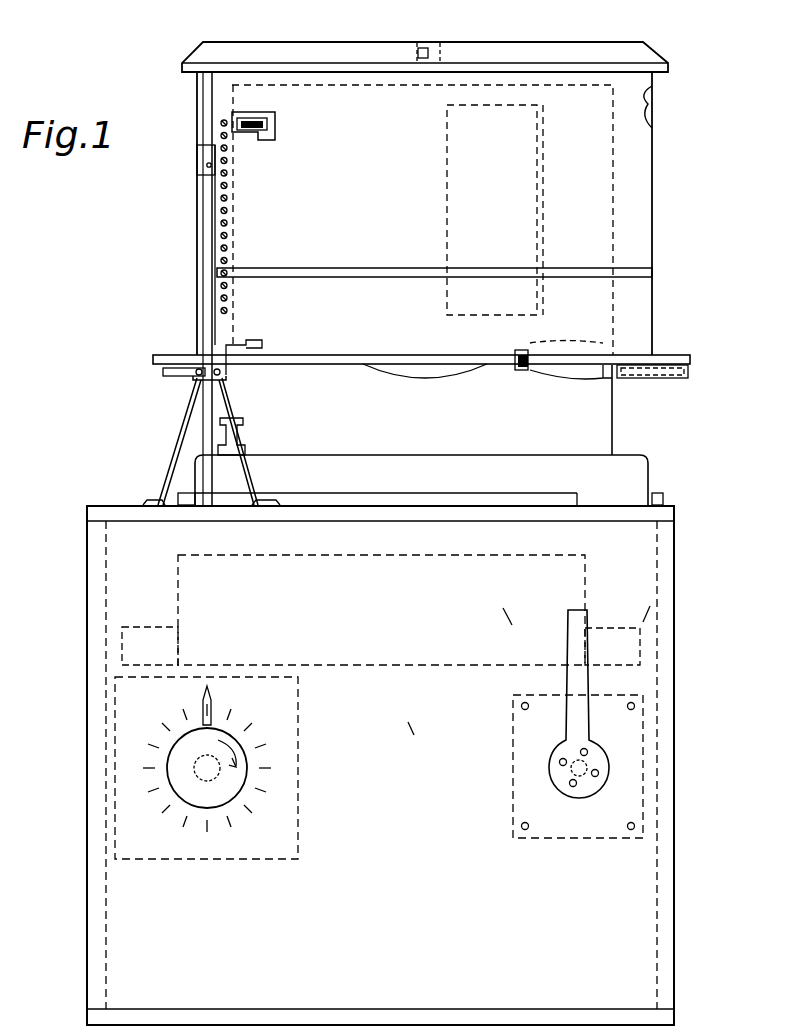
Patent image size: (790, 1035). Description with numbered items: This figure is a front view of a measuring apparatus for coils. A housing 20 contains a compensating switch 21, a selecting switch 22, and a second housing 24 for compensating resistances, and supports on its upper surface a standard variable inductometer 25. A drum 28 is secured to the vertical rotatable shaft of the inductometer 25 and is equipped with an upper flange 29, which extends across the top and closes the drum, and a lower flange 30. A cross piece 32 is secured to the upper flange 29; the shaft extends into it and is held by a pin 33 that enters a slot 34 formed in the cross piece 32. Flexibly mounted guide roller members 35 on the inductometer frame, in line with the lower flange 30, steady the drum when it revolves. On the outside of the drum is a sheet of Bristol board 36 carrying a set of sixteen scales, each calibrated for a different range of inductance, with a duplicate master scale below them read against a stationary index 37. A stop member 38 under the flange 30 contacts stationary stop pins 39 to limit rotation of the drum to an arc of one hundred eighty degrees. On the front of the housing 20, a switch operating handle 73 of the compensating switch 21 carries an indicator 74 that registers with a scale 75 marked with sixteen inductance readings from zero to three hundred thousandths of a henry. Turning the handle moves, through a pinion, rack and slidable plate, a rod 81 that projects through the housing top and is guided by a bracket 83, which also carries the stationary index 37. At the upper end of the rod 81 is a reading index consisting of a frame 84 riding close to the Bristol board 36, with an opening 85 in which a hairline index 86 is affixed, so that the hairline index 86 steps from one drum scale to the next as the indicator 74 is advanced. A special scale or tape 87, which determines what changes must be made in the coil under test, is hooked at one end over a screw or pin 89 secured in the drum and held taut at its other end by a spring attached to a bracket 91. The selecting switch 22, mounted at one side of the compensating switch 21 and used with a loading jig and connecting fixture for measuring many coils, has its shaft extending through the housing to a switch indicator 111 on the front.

The housing 20 is at (88, 606).
The compensating switch 21 is at (298, 832).
The selecting switch 22 is at (513, 812).
The second housing 24 is at (587, 568).
The variable inductometer 25 is at (420, 453).
The drum 28 is at (655, 108).
The upper flange 29 is at (182, 62).
The lower flange 30 is at (153, 359).
The cross piece 32 is at (503, 42).
The pin 33 is at (430, 60).
The slot 34 is at (420, 58).
The guide roller members 35 is at (522, 370).
The sheet of Bristol board 36 is at (652, 96).
The stationary index 37 is at (245, 355).
The stop member 38 is at (686, 378).
The stop pins 39 is at (163, 372).
The switch operating handle 73 is at (174, 775).
The indicator 74 is at (202, 716).
The scale 75 is at (283, 718).
The rod 81 is at (205, 404).
The bracket 83 is at (178, 434).
The frame 84 is at (268, 112).
The opening 85 is at (276, 124).
The hairline index 86 is at (246, 120).
The scale or tape 87 is at (353, 268).
The screw or pin 89 is at (221, 187).
The bracket 91 is at (548, 122).
The switch indicator 111 is at (573, 650).